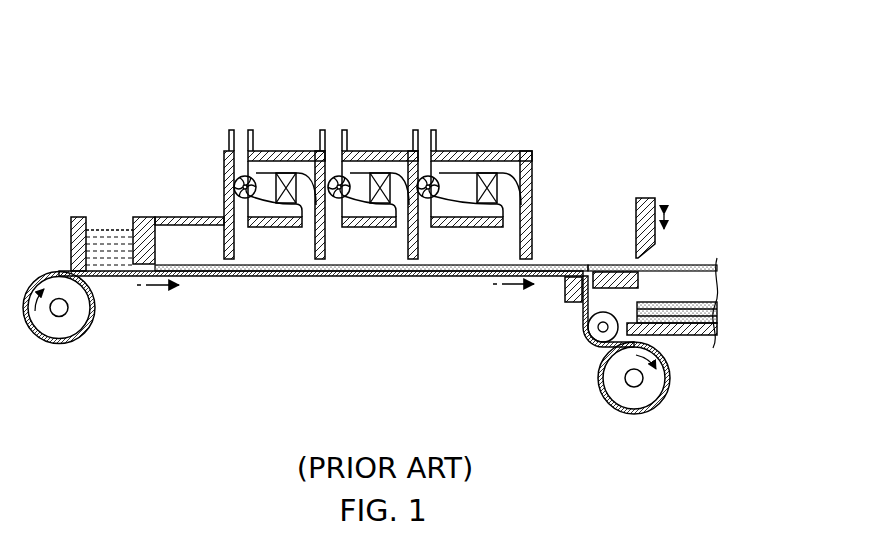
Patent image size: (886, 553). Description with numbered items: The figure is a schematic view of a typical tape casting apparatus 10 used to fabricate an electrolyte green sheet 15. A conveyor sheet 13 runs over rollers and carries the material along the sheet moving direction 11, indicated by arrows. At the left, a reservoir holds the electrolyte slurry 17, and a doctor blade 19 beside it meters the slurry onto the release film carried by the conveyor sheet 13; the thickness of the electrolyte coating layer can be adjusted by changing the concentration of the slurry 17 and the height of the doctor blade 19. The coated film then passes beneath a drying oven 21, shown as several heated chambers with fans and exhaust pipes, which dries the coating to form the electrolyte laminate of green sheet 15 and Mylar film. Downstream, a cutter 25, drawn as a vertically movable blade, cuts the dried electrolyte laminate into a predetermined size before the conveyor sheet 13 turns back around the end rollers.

The tape casting apparatus 10 is at (509, 87).
The sheet moving direction 11 is at (153, 290).
The conveyor sheet 13 is at (265, 281).
The green sheet 15 is at (552, 266).
The slurry 17 is at (110, 228).
The doctor blade 19 is at (145, 215).
The drying oven 21 is at (372, 158).
The cutter 25 is at (645, 197).